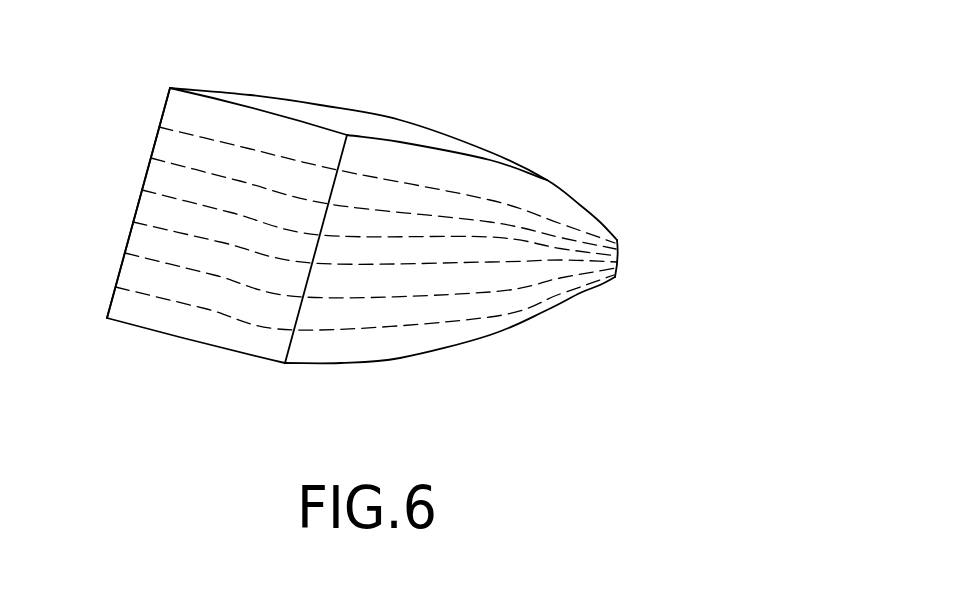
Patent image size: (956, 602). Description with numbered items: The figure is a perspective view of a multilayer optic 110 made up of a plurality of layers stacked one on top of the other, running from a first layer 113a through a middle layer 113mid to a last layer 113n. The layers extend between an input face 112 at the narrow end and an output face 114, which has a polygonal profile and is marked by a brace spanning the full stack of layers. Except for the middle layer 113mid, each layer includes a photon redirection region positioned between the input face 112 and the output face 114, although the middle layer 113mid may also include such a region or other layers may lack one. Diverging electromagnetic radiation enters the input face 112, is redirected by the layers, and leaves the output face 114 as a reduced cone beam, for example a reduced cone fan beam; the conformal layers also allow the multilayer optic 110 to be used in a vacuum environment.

The multilayer optic 110 is at (543, 73).
The input face 112 is at (620, 247).
The first layer 113a is at (228, 137).
The middle layer 113mid is at (242, 242).
The last layer 113n is at (177, 332).
The output face 114 is at (113, 200).